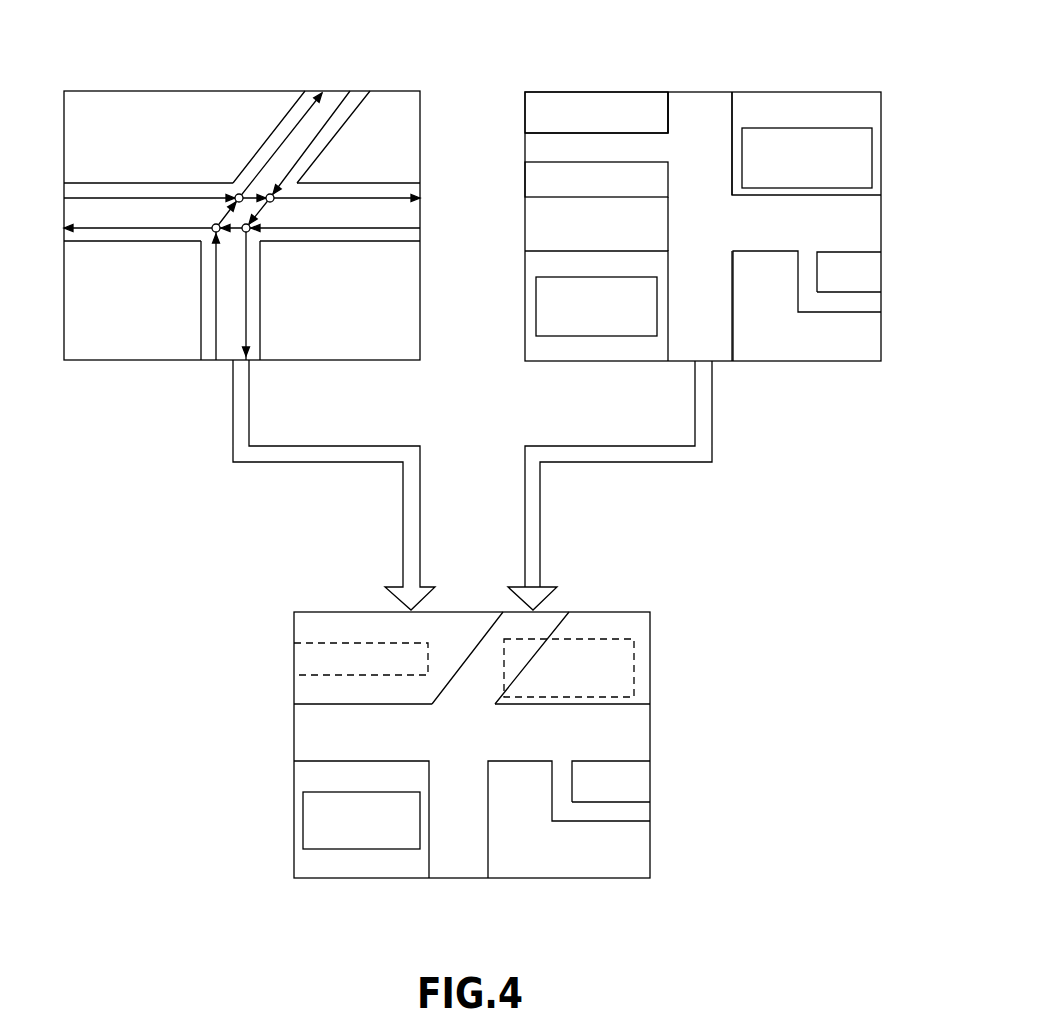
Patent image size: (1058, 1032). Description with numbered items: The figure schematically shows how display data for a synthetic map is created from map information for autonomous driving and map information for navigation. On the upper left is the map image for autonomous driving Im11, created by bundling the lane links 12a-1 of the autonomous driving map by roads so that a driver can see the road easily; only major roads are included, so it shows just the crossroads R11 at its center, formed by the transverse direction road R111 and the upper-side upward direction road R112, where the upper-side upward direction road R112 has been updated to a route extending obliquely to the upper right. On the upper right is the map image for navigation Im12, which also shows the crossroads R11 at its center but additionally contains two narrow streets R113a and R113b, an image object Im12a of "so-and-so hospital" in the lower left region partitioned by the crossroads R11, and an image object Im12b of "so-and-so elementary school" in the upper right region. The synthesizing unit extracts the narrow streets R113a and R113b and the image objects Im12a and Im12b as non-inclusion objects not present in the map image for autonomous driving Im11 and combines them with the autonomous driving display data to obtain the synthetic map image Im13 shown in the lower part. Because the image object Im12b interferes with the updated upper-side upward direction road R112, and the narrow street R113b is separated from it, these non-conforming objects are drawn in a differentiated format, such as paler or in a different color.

The map image for autonomous driving Im11 is at (202, 88).
The lane link 12a-1 is at (103, 228).
The upper-side upward direction road R112 is at (273, 127).
The crossroads R11 is at (372, 147).
The transverse direction road R111 is at (118, 242).
The map image for navigation Im12 is at (683, 88).
The narrow street R113b is at (598, 133).
The image object of so-and-so elementary school Im12b is at (842, 128).
The image object of so-and-so hospital Im12a is at (537, 310).
The narrow street R113a is at (845, 313).
The synthetic map image Im13 is at (372, 882).